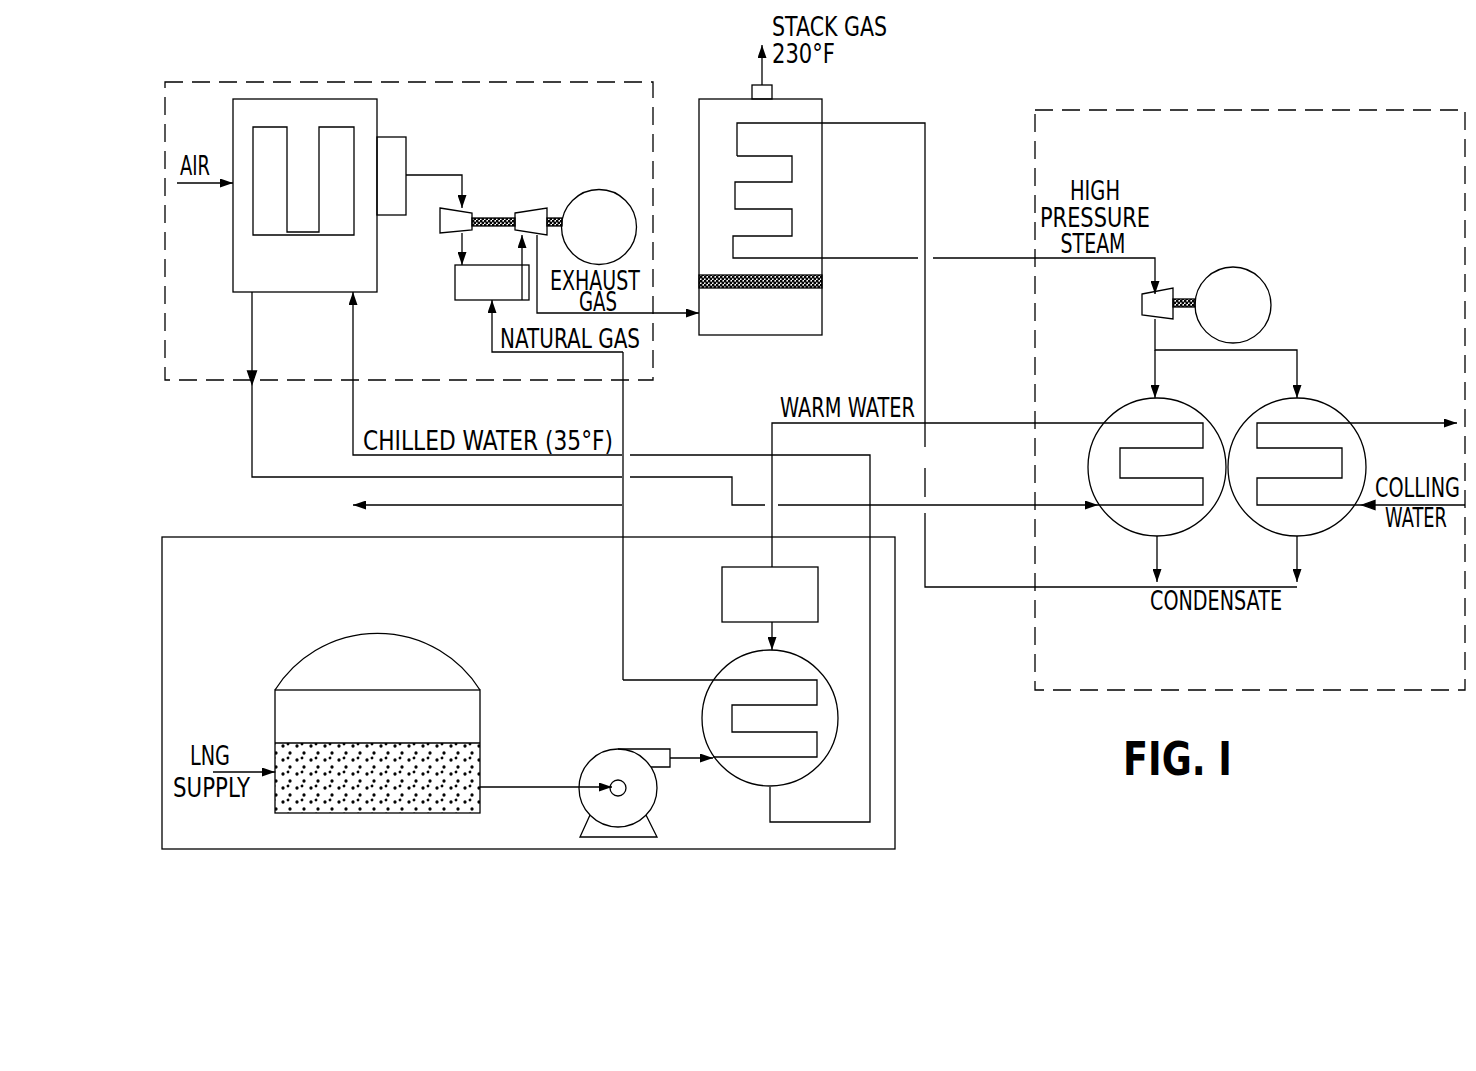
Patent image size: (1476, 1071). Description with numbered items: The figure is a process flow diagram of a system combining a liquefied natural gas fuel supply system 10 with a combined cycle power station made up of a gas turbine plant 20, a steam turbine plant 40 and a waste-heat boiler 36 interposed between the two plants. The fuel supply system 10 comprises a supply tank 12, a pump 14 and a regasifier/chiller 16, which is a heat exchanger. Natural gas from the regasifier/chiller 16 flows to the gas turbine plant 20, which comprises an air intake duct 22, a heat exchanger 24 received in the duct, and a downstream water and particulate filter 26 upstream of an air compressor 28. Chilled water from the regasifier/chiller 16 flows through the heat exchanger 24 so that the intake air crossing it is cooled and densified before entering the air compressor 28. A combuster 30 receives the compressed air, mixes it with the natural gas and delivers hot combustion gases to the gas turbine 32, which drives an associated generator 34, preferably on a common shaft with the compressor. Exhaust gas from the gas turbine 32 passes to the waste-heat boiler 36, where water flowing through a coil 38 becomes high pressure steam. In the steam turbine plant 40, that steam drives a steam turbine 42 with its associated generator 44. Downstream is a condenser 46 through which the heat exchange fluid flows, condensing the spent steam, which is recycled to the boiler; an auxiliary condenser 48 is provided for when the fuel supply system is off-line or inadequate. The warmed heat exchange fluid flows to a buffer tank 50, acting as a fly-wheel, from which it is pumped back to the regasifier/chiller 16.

The liquefied natural gas (LNG) fuel supply system 10 is at (895, 765).
The supply tank 12 is at (358, 733).
The pump 14 is at (600, 752).
The regasifier/chiller (heat exchanger) 16 is at (808, 662).
The gas turbine plant 20 is at (475, 82).
The air intake duct 22 is at (290, 99).
The heat exchanger 24 is at (340, 127).
The water and particulate filter 26 is at (400, 137).
The air compressor 28 is at (468, 208).
The combuster 30 is at (474, 298).
The gas turbine 32 is at (530, 210).
The generator 34 is at (586, 240).
The waste-heat boiler 36 is at (822, 105).
The coil 38 is at (792, 168).
The steam turbine plant 40 is at (1147, 110).
The steam turbine 42 is at (1170, 290).
The generator 44 is at (1220, 318).
The condenser 46 is at (1135, 402).
The auxiliary condenser 48 is at (1317, 400).
The buffer tank 50 is at (790, 567).